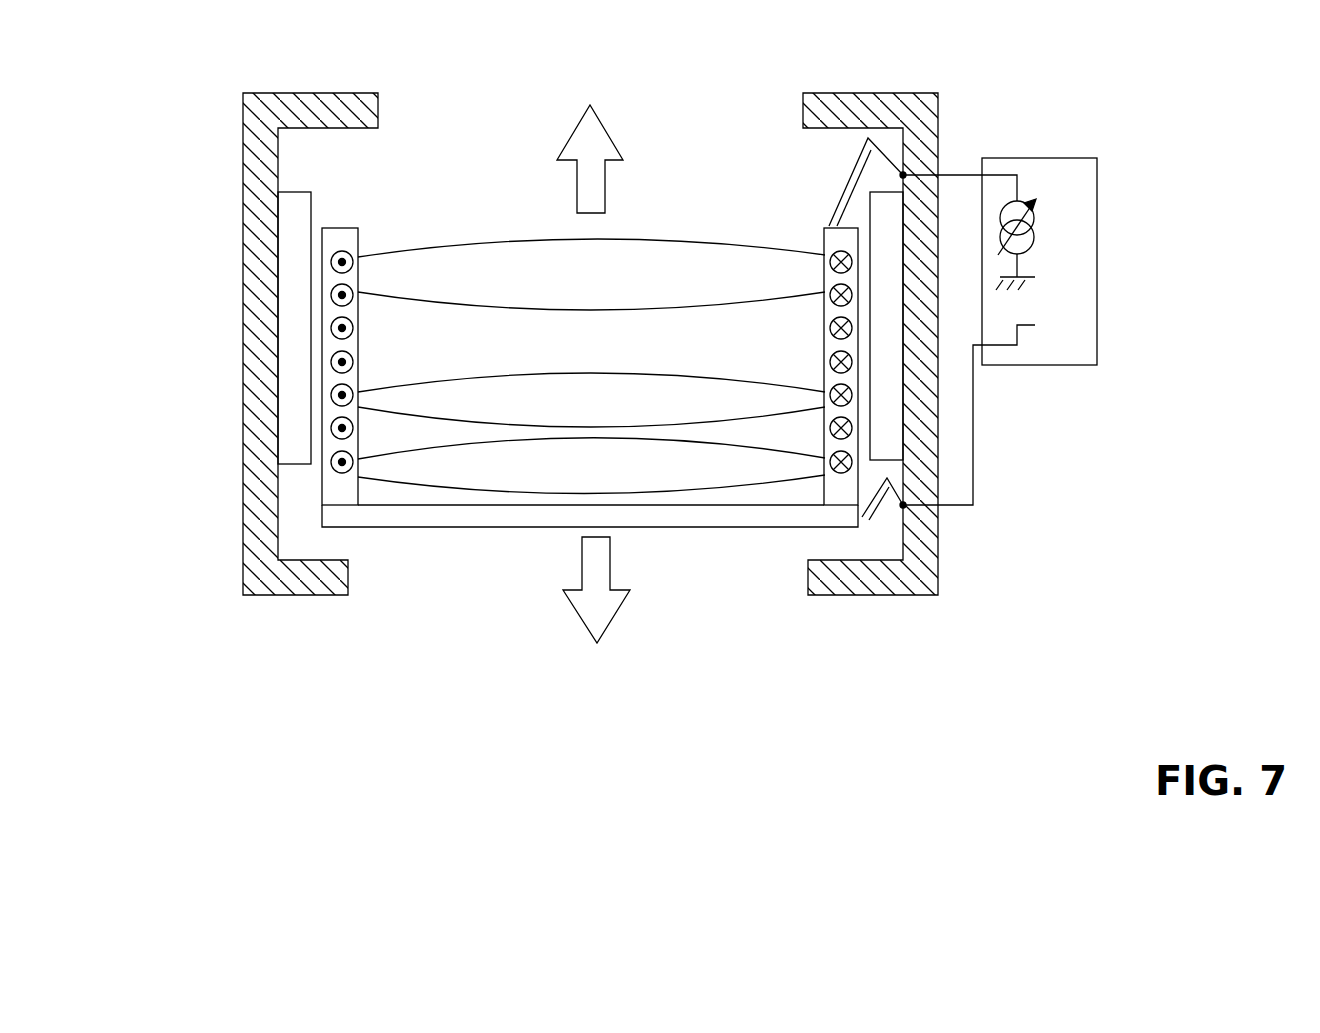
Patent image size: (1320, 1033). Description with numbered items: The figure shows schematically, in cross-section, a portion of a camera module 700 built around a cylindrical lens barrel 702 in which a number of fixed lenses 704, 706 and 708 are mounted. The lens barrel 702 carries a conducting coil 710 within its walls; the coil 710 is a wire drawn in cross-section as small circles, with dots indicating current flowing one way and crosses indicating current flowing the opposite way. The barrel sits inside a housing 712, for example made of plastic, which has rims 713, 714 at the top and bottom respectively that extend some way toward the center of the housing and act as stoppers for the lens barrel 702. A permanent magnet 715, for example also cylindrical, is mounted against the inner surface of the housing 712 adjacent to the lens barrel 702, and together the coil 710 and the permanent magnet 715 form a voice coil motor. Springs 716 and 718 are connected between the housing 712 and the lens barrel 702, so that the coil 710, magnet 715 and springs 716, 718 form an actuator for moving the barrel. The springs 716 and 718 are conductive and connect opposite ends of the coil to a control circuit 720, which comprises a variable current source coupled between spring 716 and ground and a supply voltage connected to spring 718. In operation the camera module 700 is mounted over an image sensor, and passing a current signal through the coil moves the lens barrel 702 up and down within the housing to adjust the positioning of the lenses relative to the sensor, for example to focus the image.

The camera module 700 is at (220, 98).
The cylindrical lens barrel 702 is at (340, 233).
The fixed lens 704 is at (520, 287).
The fixed lens 706 is at (668, 388).
The fixed lens 708 is at (760, 467).
The conducting coil 710 is at (345, 258).
The housing 712 is at (935, 130).
The top rim 713 is at (822, 103).
The bottom rim 714 is at (808, 565).
The permanent magnet 715 is at (293, 288).
The spring 716 is at (852, 182).
The spring 718 is at (905, 508).
The control circuit 720 is at (1057, 160).